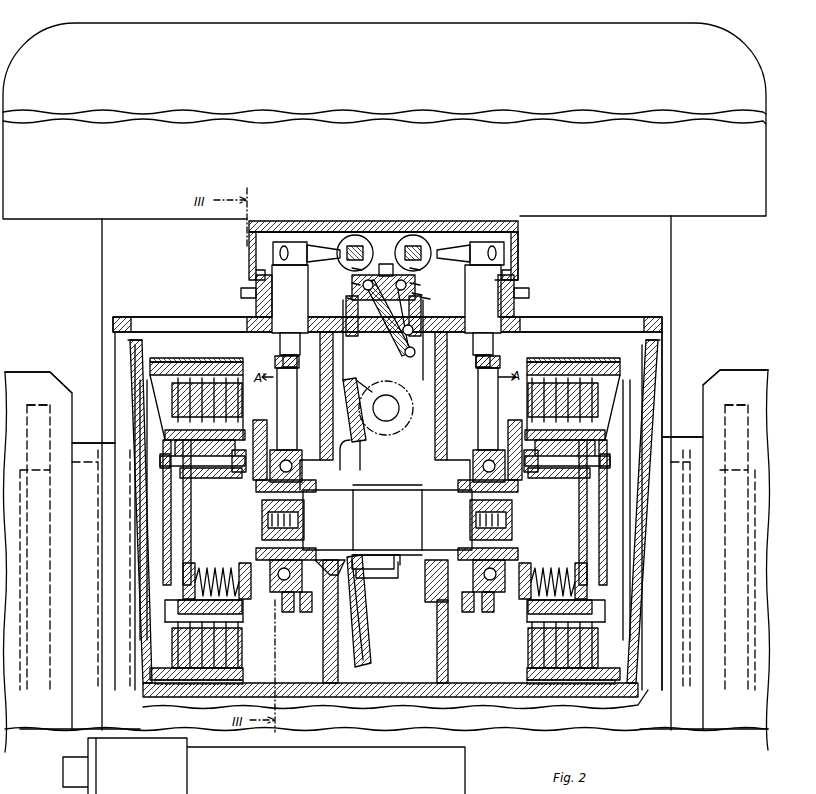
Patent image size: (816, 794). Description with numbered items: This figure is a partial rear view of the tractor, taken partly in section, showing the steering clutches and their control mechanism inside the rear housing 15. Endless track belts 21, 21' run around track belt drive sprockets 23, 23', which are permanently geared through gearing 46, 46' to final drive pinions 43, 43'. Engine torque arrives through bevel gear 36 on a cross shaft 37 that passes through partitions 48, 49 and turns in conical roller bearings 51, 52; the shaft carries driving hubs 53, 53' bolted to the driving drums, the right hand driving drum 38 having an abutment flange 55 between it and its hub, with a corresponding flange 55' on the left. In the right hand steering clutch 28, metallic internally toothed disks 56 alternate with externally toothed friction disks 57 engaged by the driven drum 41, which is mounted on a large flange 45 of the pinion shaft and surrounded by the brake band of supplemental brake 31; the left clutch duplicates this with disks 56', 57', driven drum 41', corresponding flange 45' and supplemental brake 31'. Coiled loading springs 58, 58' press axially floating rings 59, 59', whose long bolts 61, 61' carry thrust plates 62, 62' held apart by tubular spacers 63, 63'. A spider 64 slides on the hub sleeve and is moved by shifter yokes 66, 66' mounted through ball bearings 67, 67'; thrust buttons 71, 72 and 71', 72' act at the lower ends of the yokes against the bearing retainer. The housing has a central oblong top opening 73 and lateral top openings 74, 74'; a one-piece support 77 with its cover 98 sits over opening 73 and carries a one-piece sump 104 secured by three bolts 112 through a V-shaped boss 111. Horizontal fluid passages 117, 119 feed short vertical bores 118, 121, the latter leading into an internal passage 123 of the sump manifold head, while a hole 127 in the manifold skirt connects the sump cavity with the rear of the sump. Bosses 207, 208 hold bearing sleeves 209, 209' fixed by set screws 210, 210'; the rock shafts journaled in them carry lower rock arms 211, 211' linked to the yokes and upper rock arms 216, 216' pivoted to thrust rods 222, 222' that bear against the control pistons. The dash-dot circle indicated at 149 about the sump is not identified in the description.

The rear housing 15 is at (663, 326).
The endless track belt 21 is at (735, 368).
The endless track belt 21' is at (38, 373).
The track belt drive sprocket 23 is at (736, 396).
The track belt drive sprocket 23' is at (40, 396).
The steering clutch 28 is at (252, 626).
The supplemental brake 31 is at (573, 511).
The supplemental brake 31' is at (196, 513).
The bevel gear 36 is at (362, 642).
The cross shaft 37 is at (404, 555).
The driving drum 38 is at (387, 603).
The driven drum 41 is at (583, 364).
The driven drum 41' is at (185, 366).
The final drive pinion 43 is at (682, 428).
The final drive pinion 43' is at (93, 432).
The flange 45 is at (633, 510).
The case wall plate 45' is at (137, 510).
The gearing 46 is at (704, 738).
The gearing 46' is at (80, 739).
The partition 48 is at (440, 659).
The partition 49 is at (326, 665).
The conical roller bearing 51 is at (467, 520).
The conical roller bearing 52 is at (307, 520).
The driving hub 53 is at (558, 504).
The driving hub 53' is at (213, 491).
The abutment flange 55 is at (549, 523).
The abutment flange 55' is at (221, 523).
The metallic internally toothed disk 56 is at (571, 609).
The clutch disk 56' is at (199, 609).
The externally toothed friction disk 57 is at (552, 646).
The clutch disk 57' is at (216, 647).
The coiled loading spring 58 is at (550, 541).
The loading spring 58' is at (200, 572).
The axially floating ring 59 is at (553, 570).
The axially floating ring 59' is at (223, 572).
The bolt 61 is at (565, 469).
The bolt 61' is at (205, 470).
The thrust plate 62 is at (600, 482).
The thrust plate 62' is at (188, 512).
The tubular spacer 63 is at (567, 478).
The tubular spacer 63' is at (203, 475).
The spider 64 is at (260, 420).
The shifter yoke 66 is at (480, 419).
The clutch shifter yoke 66' is at (296, 419).
The ball bearing 67 is at (483, 576).
The ball bearing 67' is at (290, 576).
The thrust button 71 is at (487, 613).
The thrust button 71' is at (291, 610).
The thrust button 72 is at (464, 615).
The thrust button 72' is at (309, 610).
The oblong top opening 73 is at (350, 340).
The top opening 74 is at (582, 315).
The top opening 74' is at (189, 315).
The one-piece support 77 is at (518, 235).
The cover 98 is at (372, 230).
The one-piece sump 104 is at (398, 396).
The V-shaped boss 111 is at (420, 270).
The bolt 112 is at (386, 263).
The horizontal fluid passage 117 is at (420, 285).
The short vertical bore 118 is at (422, 295).
The horizontal fluid passage 119 is at (352, 270).
The short vertical bore 121 is at (352, 285).
The internal passage 123 is at (347, 300).
The hole 127 is at (381, 350).
The pivot circle 149 is at (402, 437).
The boss 207 is at (513, 283).
The boss 208 is at (258, 283).
The bearing sleeve 209 is at (496, 310).
The bearing sleeve 209' is at (271, 310).
The set screw 210 is at (532, 296).
The set screw 210' is at (238, 296).
The lower rock arm 211 is at (503, 356).
The lower rock arm 211' is at (268, 356).
The upper rock arm 216 is at (468, 246).
The upper rock arm 216' is at (308, 246).
The thrust rod 222 is at (417, 236).
The thrust rod 222' is at (341, 236).